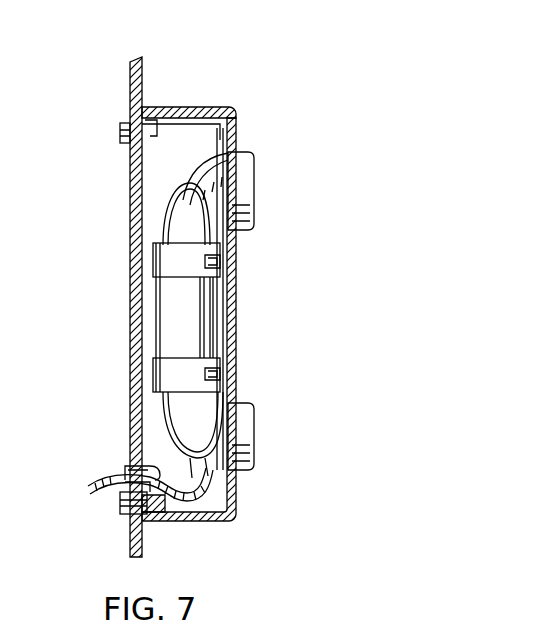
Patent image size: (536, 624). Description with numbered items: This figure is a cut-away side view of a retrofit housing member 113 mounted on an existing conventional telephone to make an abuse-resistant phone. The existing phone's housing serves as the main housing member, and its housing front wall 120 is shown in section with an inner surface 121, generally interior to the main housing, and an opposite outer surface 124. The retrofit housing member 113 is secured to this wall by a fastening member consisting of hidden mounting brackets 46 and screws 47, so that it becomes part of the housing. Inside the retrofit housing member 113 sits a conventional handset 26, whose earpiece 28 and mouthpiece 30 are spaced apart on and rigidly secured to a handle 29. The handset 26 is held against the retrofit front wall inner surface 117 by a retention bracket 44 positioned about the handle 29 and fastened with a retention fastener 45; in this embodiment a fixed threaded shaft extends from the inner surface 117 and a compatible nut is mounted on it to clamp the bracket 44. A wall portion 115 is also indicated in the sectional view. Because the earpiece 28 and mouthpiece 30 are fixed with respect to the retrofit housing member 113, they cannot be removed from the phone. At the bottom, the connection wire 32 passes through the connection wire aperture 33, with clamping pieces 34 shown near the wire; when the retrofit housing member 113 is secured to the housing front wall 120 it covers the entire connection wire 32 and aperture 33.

The housing front wall 120 is at (135, 60).
The inner surface 121 is at (127, 105).
The outer surface 124 is at (145, 95).
The retrofit housing member 113 is at (236, 112).
The conventional handset 26 is at (161, 197).
The earpiece 28 is at (245, 187).
The handle 29 is at (185, 312).
The retrofit front wall inner surface 117 is at (215, 297).
The vertical plate 115 is at (237, 321).
The retention bracket 44 is at (187, 353).
The retention fastener 45 is at (210, 373).
The mouthpiece 30 is at (250, 437).
The connection wire 32 is at (92, 485).
The connection wire aperture 33 is at (150, 464).
The clamp half 34 is at (127, 467).
The screw 47 is at (123, 514).
The hidden mounting bracket 46 is at (150, 510).